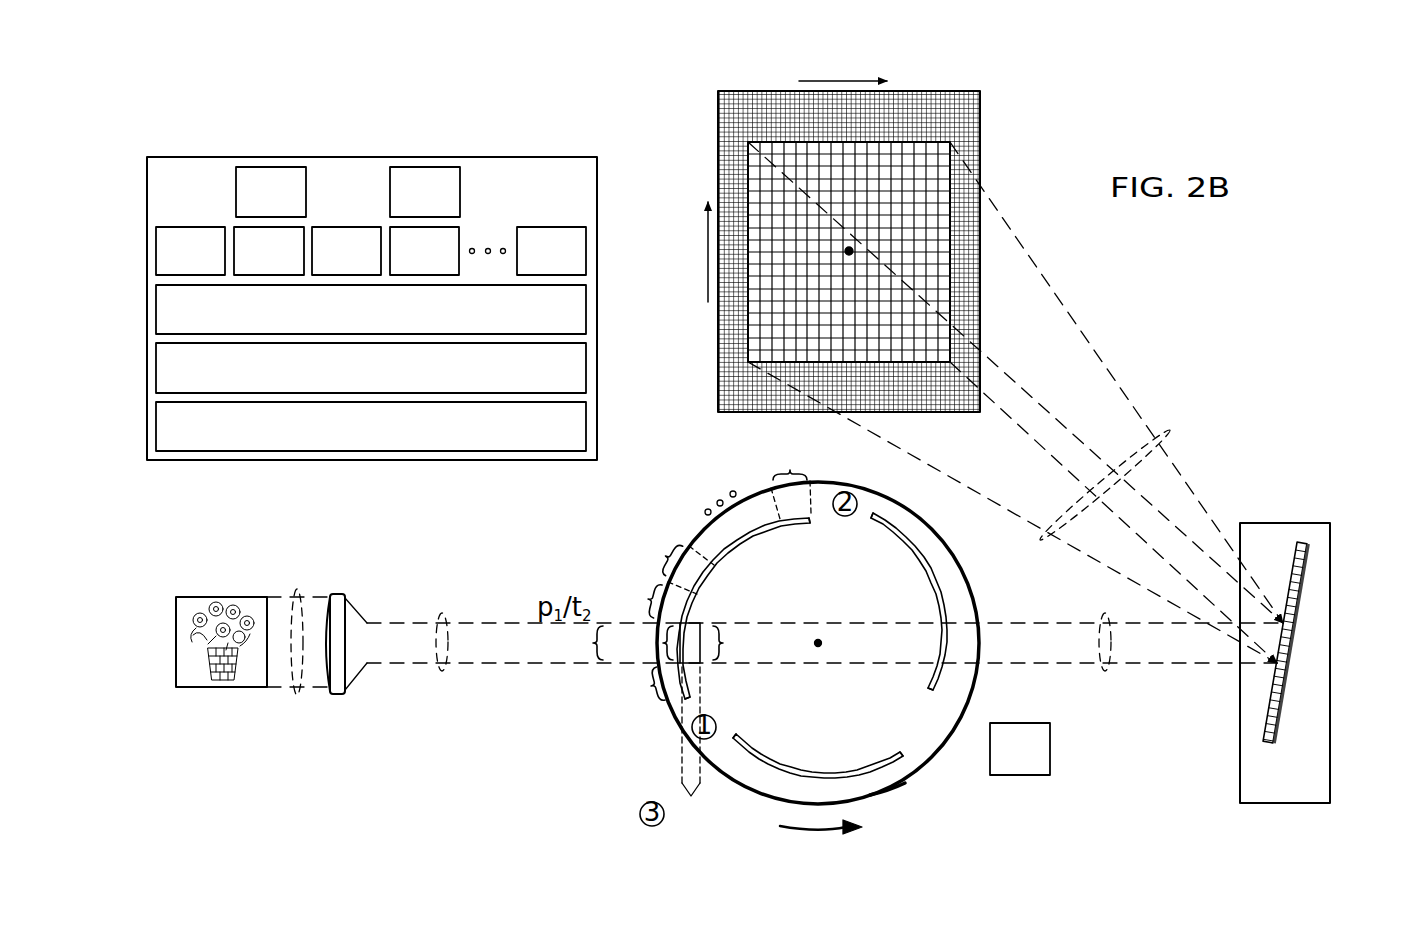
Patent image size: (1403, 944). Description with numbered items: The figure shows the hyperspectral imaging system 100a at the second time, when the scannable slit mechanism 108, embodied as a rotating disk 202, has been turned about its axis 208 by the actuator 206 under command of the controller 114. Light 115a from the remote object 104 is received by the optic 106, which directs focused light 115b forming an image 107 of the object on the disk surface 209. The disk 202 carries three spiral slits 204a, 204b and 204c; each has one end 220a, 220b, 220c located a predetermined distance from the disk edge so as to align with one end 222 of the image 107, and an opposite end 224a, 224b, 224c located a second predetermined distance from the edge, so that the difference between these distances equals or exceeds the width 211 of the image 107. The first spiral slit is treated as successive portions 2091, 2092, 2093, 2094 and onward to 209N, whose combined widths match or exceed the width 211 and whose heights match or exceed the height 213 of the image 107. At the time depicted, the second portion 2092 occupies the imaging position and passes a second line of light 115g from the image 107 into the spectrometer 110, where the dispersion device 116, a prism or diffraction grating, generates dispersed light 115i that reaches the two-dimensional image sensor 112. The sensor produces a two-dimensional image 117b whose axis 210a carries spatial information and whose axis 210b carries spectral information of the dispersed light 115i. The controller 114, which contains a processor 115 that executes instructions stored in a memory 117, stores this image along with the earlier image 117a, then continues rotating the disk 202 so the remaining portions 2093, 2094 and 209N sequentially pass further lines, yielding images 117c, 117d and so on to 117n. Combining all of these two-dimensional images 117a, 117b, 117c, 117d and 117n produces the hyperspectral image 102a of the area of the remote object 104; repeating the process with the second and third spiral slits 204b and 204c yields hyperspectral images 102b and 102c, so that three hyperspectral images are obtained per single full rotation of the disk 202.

The hyperspectral imaging system 100a is at (302, 98).
The controller 114 is at (373, 157).
The processor 115 is at (292, 207).
The memory 117 is at (443, 207).
The two-dimensional image 117a is at (215, 264).
The two-dimensional image 117b is at (294, 264).
The two-dimensional image 117c is at (372, 264).
The two-dimensional image 117d is at (450, 264).
The two-dimensional image 117n is at (577, 264).
The hyperspectral image 102a is at (397, 322).
The hyperspectral image 102b is at (397, 381).
The hyperspectral image 102c is at (397, 439).
The two-dimensional image sensor 112 is at (716, 117).
The axis 210a is at (707, 250).
The axis 210b is at (847, 81).
The dispersed light 115i is at (1167, 433).
The spectrometer 110 is at (1287, 805).
The dispersion device 116 is at (1268, 745).
The second line of light 115g is at (1105, 673).
The remote object 104 is at (222, 692).
The optic 106 is at (340, 592).
The light 115a is at (297, 697).
The focused light 115b is at (442, 672).
The disk 202 is at (772, 800).
The scannable slit mechanism 108 is at (890, 795).
The axis 208 is at (818, 650).
The spiral slit 204a is at (745, 547).
The spiral slit 204b is at (935, 595).
The spiral slit 204c is at (850, 767).
The opposite end of spiral slit 224a is at (813, 518).
The opposite end of spiral slit 224b is at (930, 697).
The opposite end of spiral slit 224c is at (740, 725).
The end of spiral slit 220a is at (688, 702).
The end of spiral slit 220b is at (868, 513).
The end of spiral slit 220c is at (903, 757).
The image 107 is at (690, 623).
The width of the image 211 is at (689, 748).
The end of the image 222 is at (645, 643).
The height of the image 213 is at (739, 643).
The disk surface 209 is at (908, 704).
The portion of spiral slit 209N is at (775, 456).
The first portion of spiral slit 2091 is at (634, 693).
The second portion of spiral slit 2092 is at (570, 643).
The portion of spiral slit 2093 is at (628, 595).
The portion of spiral slit 2094 is at (649, 550).
The actuator 206 is at (1038, 761).